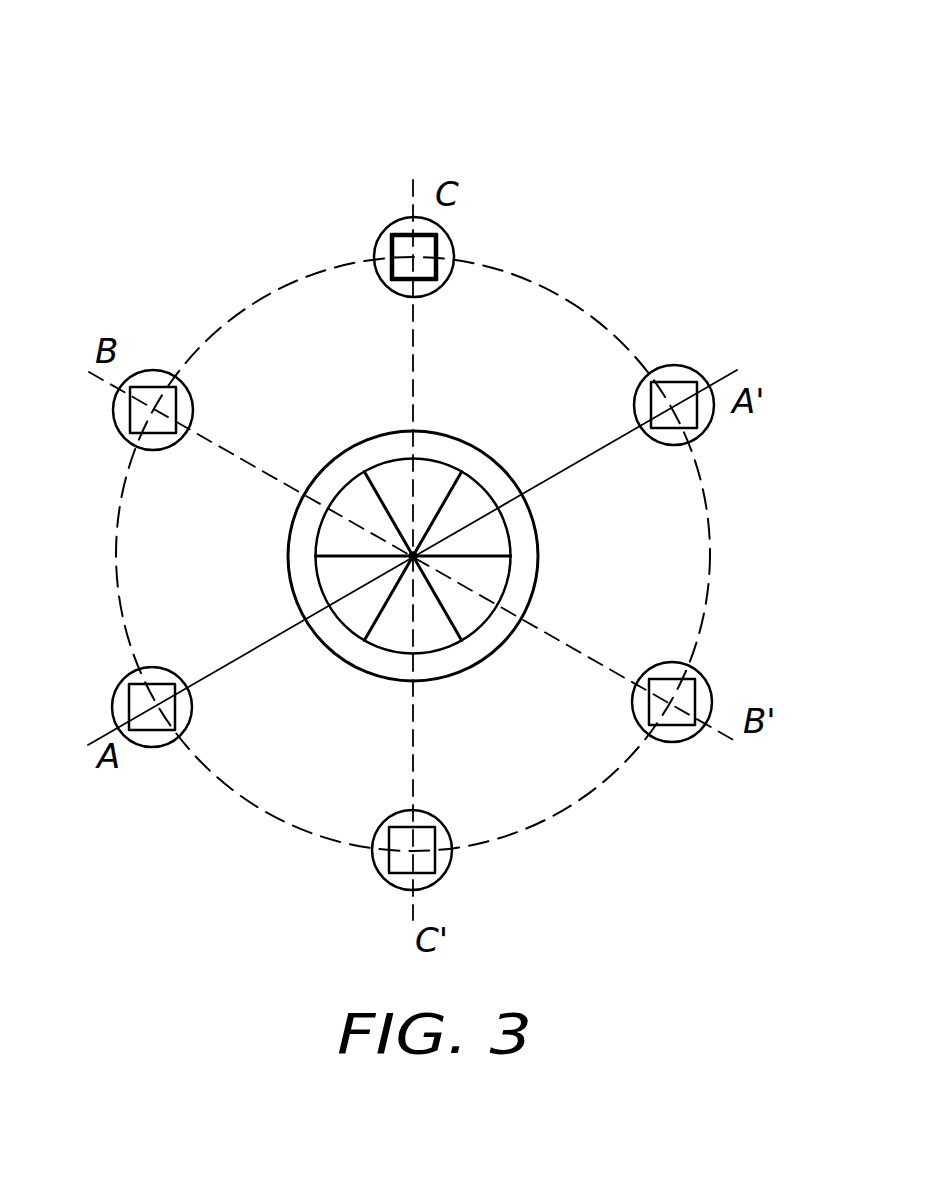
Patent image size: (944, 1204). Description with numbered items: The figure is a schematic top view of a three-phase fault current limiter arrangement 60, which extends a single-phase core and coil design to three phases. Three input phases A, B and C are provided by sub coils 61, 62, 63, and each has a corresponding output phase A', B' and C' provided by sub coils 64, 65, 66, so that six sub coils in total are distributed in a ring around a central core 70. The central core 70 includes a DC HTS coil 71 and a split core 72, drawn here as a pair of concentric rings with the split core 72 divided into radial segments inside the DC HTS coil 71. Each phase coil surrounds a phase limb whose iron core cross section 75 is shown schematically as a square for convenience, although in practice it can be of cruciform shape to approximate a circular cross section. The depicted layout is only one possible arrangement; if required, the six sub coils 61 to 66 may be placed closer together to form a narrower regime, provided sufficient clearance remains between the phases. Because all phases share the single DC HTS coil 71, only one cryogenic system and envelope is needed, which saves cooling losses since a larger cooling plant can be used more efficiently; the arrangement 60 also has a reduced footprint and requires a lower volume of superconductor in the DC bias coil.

The arrangement 60 is at (702, 175).
The input phase A 61 is at (110, 683).
The input phase B 62 is at (147, 358).
The input phase C 63 is at (374, 234).
The output phase A' 64 is at (683, 357).
The output phase B' 65 is at (788, 687).
The output phase C' 66 is at (448, 884).
The central core 70 is at (363, 680).
The DC HTS coil 71 is at (314, 478).
The split core 72 is at (499, 556).
The iron core cross section 75 is at (445, 247).